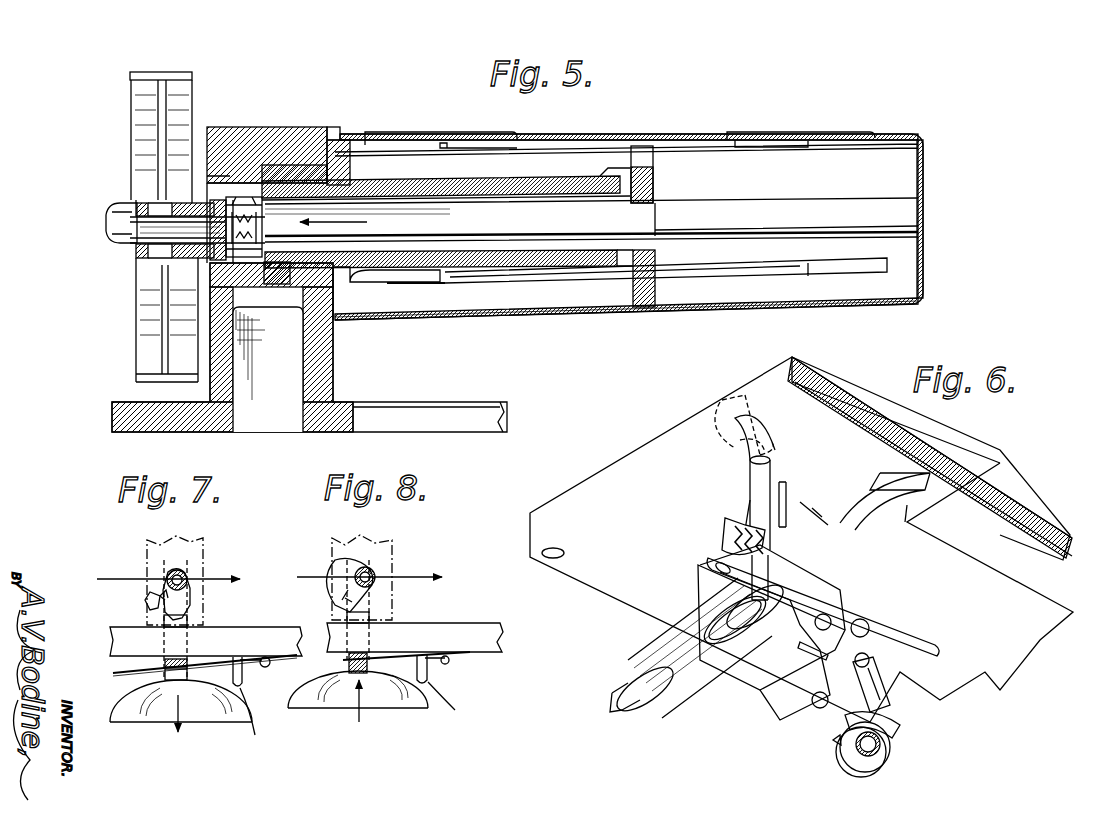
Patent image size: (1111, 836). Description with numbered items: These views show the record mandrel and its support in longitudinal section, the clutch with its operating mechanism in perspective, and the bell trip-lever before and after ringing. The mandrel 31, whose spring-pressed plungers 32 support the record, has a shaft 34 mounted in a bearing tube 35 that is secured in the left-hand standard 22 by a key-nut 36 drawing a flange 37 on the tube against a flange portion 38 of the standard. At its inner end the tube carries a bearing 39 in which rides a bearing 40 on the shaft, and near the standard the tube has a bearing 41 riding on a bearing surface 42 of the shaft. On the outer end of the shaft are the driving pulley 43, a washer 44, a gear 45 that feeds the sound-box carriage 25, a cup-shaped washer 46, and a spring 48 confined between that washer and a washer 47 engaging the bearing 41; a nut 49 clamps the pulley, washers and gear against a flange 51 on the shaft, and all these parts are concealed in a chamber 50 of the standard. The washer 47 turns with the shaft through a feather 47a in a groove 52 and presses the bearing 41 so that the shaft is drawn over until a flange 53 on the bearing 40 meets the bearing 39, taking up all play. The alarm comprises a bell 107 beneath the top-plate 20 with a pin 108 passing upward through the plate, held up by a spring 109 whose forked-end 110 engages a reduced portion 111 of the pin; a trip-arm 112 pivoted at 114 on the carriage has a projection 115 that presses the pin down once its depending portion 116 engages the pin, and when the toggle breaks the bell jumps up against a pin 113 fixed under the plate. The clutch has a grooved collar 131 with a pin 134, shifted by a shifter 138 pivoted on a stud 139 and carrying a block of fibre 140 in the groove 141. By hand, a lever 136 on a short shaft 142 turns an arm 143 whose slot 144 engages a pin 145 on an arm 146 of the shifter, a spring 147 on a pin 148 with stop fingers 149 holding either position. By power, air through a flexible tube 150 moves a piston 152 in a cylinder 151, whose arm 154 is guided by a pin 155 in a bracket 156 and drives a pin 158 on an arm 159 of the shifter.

In FIG. 6, the top-plate 20 is at (620, 465).
In FIG. 7, the top-plate 20 is at (265, 635).
In FIG. 8, the top-plate 20 is at (468, 632).
In FIG. 5, the left-hand standard 22 is at (336, 362).
In FIG. 7, the sound-box carriage 25 is at (148, 550).
In FIG. 8, the sound-box carriage 25 is at (345, 545).
In FIG. 5, the mandrel 31 is at (680, 136).
In FIG. 5, the spring-pressed plungers 32 is at (436, 134).
In FIG. 5, the shaft 34 is at (860, 212).
In FIG. 5, the bearing tube 35 is at (597, 278).
In FIG. 5, the key-nut 36 is at (275, 290).
In FIG. 5, the flange 37 is at (381, 283).
In FIG. 5, the flange portion 38 is at (352, 170).
In FIG. 5, the bearing 39 is at (623, 178).
In FIG. 5, the bearing 40 is at (662, 196).
In FIG. 5, the bearing 41 is at (303, 182).
In FIG. 5, the bearing surface 42 is at (369, 221).
In FIG. 5, the driving pulley 43 is at (134, 120).
In FIG. 5, the washer 44 is at (178, 268).
In FIG. 5, the gear 45 is at (214, 262).
In FIG. 5, the cup-shaped washer 46 is at (234, 198).
In FIG. 5, the washer 47 is at (212, 270).
In FIG. 5, the feather 47a is at (248, 203).
In FIG. 5, the spring 48 is at (148, 328).
In FIG. 5, the nut 49 is at (110, 228).
In FIG. 5, the chamber 50 is at (216, 174).
In FIG. 5, the flange 51 is at (274, 180).
In FIG. 5, the groove 52 is at (228, 198).
In FIG. 5, the flange 53 is at (628, 268).
In FIG. 7, the bell 107 is at (158, 715).
In FIG. 8, the bell 107 is at (355, 705).
In FIG. 7, the pin 108 is at (181, 680).
In FIG. 8, the pin 108 is at (362, 678).
In FIG. 7, the spring 109 is at (248, 668).
In FIG. 8, the spring 109 is at (447, 662).
In FIG. 7, the forked-end 110 is at (165, 663).
In FIG. 7, the reduced portion 111 is at (162, 672).
In FIG. 7, the trip-arm 112 is at (170, 575).
In FIG. 8, the trip-arm 112 is at (330, 572).
In FIG. 7, the pin 113 is at (265, 723).
In FIG. 8, the pin 113 is at (462, 704).
In FIG. 7, the pivot 114 is at (186, 575).
In FIG. 8, the pivot 114 is at (375, 572).
In FIG. 7, the projection 115 is at (192, 616).
In FIG. 8, the projection 115 is at (362, 608).
In FIG. 7, the depending portion 116 is at (144, 605).
In FIG. 6, the grooved collar 131 is at (856, 775).
In FIG. 6, the pin 134 is at (835, 748).
In FIG. 6, the lever 136 is at (715, 440).
In FIG. 6, the shifter 138 is at (892, 695).
In FIG. 6, the stud 139 is at (870, 628).
In FIG. 6, the block of fibre 140 is at (902, 728).
In FIG. 6, the groove 141 is at (885, 760).
In FIG. 6, the short shaft 142 is at (752, 492).
In FIG. 6, the arm 143 is at (748, 520).
In FIG. 6, the slot 144 is at (768, 532).
In FIG. 6, the pin 145 is at (772, 568).
In FIG. 6, the arm 146 is at (805, 592).
In FIG. 6, the spring 147 is at (722, 540).
In FIG. 6, the pin 148 is at (786, 505).
In FIG. 6, the stop fingers 149 is at (813, 505).
In FIG. 6, the flexible tube 150 is at (612, 700).
In FIG. 6, the cylinder 151 is at (645, 650).
In FIG. 6, the piston 152 is at (752, 685).
In FIG. 6, the arm 154 is at (770, 690).
In FIG. 6, the pin 155 is at (818, 708).
In FIG. 6, the bracket 156 is at (718, 595).
In FIG. 6, the pin 158 is at (832, 622).
In FIG. 6, the arm 159 is at (868, 668).